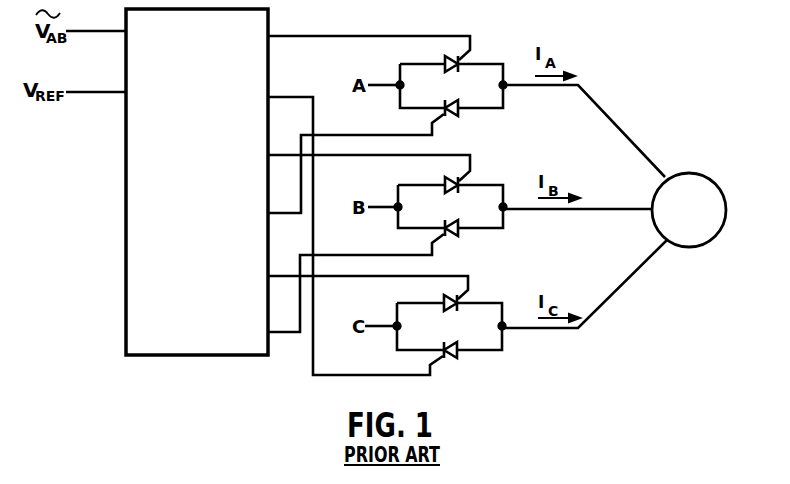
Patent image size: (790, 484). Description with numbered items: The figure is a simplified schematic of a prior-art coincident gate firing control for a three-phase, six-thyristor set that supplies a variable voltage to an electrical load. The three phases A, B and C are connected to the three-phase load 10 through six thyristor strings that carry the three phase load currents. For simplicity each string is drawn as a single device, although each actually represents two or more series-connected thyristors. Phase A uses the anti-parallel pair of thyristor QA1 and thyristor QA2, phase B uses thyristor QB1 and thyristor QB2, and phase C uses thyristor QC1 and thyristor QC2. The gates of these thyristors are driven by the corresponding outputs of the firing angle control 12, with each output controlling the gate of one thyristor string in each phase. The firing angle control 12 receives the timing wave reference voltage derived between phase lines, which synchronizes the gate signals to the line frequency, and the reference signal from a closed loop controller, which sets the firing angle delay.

The three-phase load 10 is at (684, 247).
The firing angle control 12 is at (256, 9).
The thyristor QA1 is at (445, 59).
The thyristor QA2 is at (458, 112).
The thyristor QB1 is at (445, 180).
The thyristor QB2 is at (458, 232).
The thyristor QC1 is at (444, 298).
The thyristor QC2 is at (457, 354).